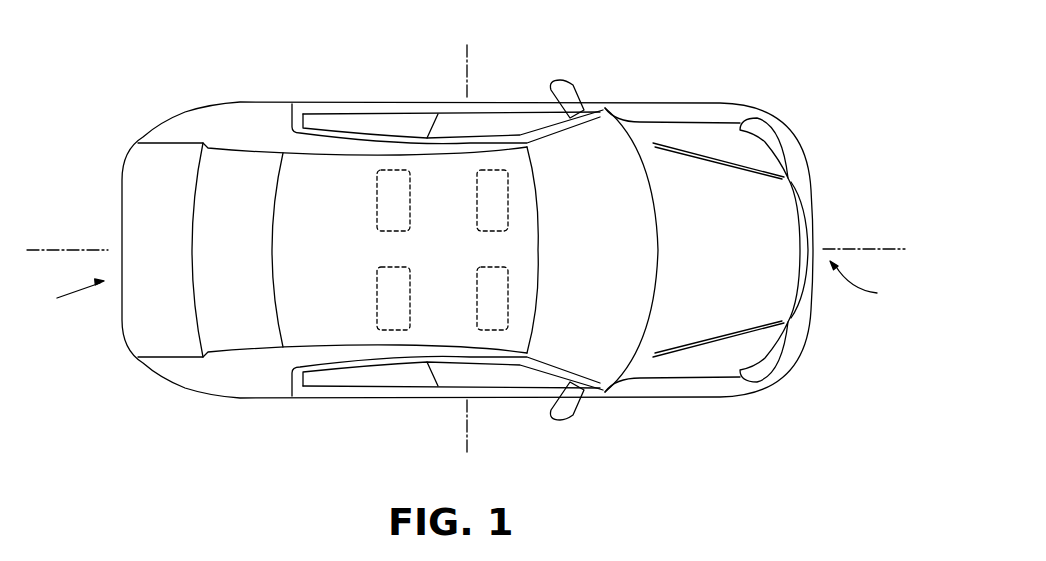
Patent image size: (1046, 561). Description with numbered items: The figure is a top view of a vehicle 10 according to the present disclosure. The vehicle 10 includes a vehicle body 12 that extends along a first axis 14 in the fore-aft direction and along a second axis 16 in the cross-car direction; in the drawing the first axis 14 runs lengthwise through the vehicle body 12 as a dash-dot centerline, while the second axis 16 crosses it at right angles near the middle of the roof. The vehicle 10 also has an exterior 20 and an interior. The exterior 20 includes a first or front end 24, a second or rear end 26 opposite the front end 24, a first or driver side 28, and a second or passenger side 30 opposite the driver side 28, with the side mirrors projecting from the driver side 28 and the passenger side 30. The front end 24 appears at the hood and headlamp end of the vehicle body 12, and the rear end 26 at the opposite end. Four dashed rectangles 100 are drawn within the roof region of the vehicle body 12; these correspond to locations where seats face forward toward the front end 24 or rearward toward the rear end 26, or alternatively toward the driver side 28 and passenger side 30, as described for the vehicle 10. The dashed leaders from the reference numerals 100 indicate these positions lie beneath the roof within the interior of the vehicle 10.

The vehicle 10 is at (784, 52).
The vehicle body 12 is at (644, 112).
The first axis 14 is at (866, 248).
The second axis 16 is at (463, 87).
The exterior 20 is at (738, 401).
The front end 24 is at (863, 284).
The rear end 26 is at (67, 294).
The driver side 28 is at (538, 98).
The passenger side 30 is at (538, 402).
The sensor 100 is at (390, 170).